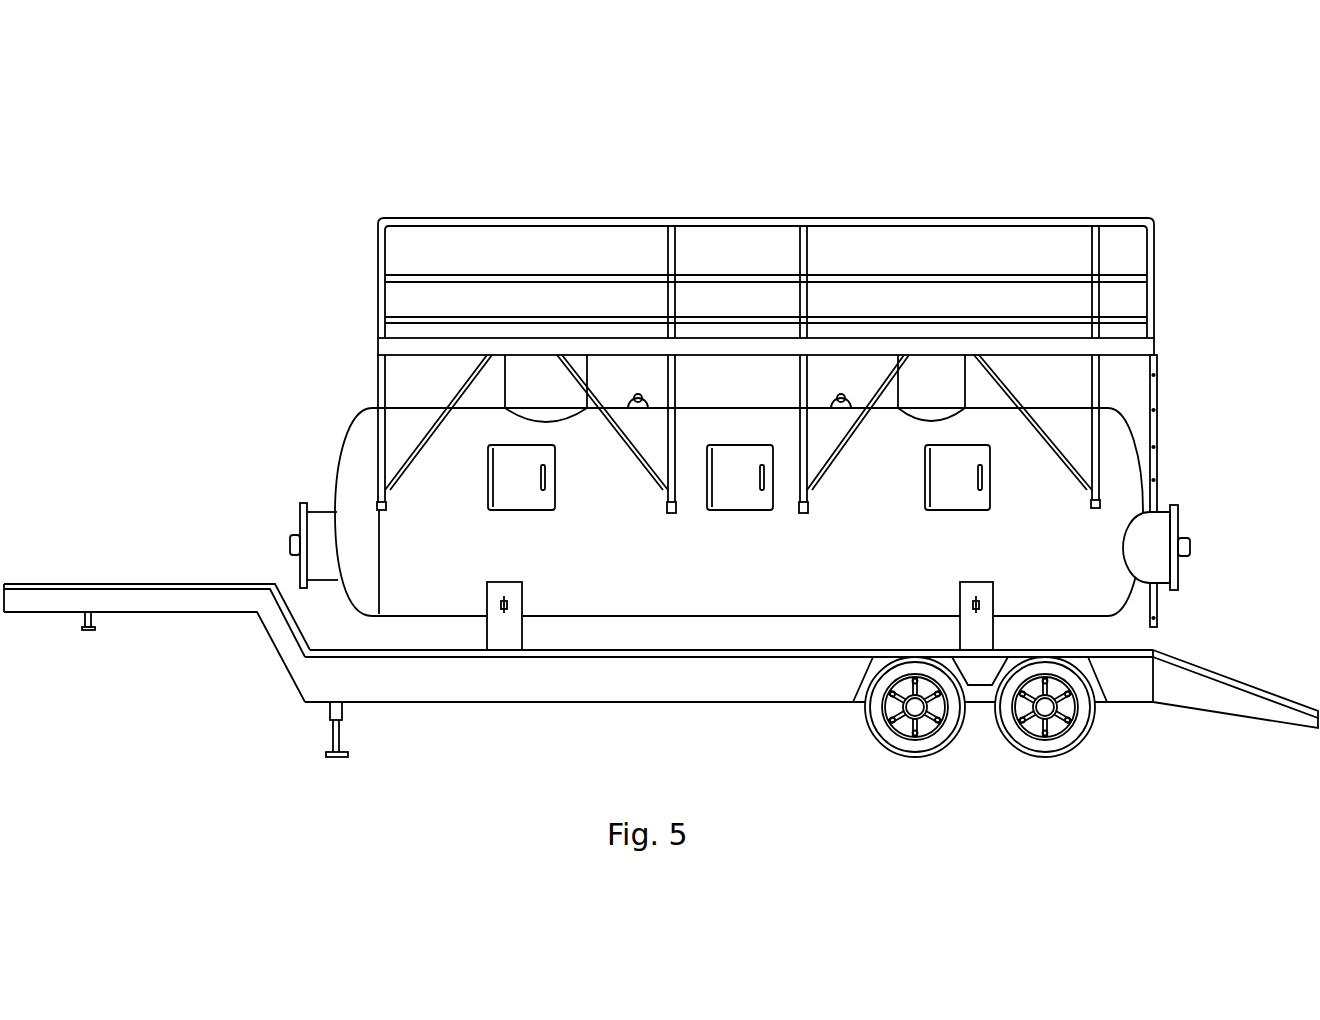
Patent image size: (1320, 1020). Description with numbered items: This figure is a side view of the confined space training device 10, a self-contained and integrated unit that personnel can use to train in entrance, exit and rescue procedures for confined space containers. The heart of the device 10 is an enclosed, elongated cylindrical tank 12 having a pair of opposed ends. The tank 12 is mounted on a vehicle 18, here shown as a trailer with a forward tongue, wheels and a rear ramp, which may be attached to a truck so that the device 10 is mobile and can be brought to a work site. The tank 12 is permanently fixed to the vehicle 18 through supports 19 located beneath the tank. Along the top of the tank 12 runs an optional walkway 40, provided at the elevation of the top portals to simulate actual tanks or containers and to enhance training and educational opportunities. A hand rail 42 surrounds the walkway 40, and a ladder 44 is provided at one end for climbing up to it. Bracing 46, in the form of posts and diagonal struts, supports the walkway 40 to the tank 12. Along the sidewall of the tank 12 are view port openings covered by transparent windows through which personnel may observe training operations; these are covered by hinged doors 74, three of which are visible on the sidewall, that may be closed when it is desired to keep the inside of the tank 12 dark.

The confined space training device 10 is at (1236, 276).
The tank 12 is at (685, 590).
The vehicle 18 is at (132, 584).
The supports 19 is at (510, 630).
The walkway 40 is at (475, 348).
The hand rail 42 is at (945, 220).
The ladder 44 is at (1158, 458).
The bracing 46 is at (378, 375).
The hinged doors 74 is at (530, 510).